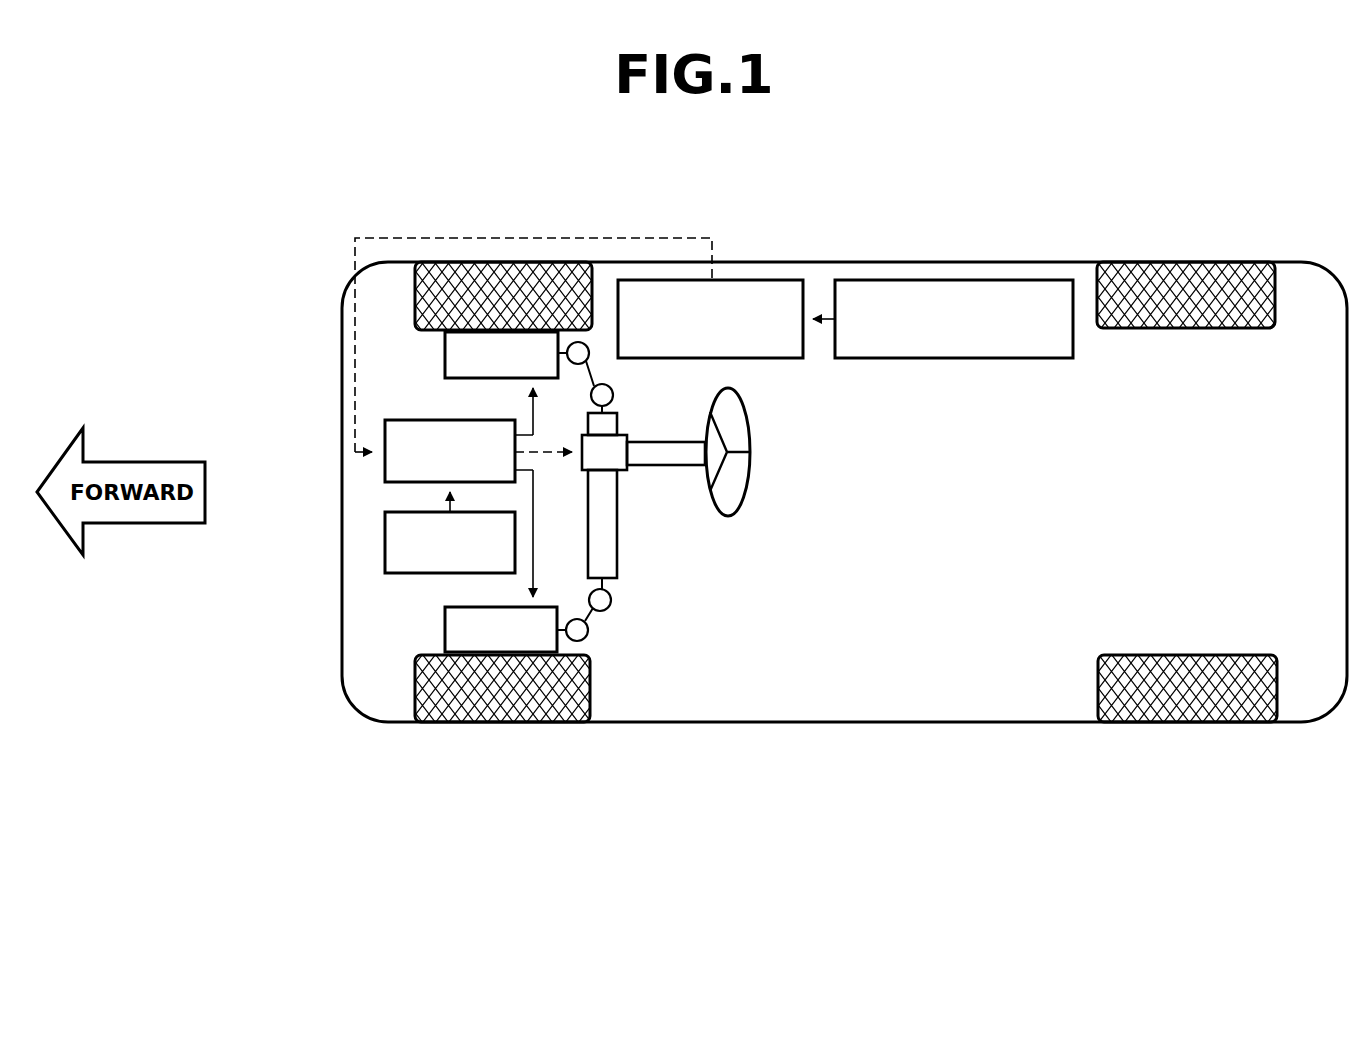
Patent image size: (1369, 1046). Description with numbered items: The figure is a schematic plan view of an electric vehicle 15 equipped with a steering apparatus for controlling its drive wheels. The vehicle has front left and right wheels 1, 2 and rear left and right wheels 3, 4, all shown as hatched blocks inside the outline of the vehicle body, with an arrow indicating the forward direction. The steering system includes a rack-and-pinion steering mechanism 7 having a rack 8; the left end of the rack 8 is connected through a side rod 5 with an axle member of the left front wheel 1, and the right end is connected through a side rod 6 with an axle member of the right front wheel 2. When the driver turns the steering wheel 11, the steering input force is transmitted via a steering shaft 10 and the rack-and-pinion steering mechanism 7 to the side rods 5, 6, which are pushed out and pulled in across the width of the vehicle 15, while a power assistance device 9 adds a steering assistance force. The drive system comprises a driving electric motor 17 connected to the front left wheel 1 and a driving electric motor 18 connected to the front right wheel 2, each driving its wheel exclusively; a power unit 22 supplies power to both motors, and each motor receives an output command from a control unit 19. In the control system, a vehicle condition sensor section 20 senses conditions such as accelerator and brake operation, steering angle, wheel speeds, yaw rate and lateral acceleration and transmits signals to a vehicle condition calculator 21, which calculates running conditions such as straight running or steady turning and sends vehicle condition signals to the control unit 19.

The front left wheel 1 is at (445, 712).
The front right wheel 2 is at (498, 272).
The rear left wheel 3 is at (1148, 713).
The rear right wheel 4 is at (1163, 264).
The side rod 5 is at (604, 612).
The side rod 6 is at (602, 383).
The rack-and-pinion steering mechanism 7 is at (690, 466).
The rack 8 is at (610, 553).
The power assistance device 9 is at (668, 476).
The steering shaft 10 is at (745, 490).
The steering wheel 11 is at (737, 427).
The electric vehicle 15 is at (356, 714).
The driving electric motor 17 is at (445, 632).
The driving electric motor 18 is at (445, 353).
The control unit 19 is at (385, 465).
The vehicle condition sensor section 20 is at (1000, 278).
The vehicle condition calculator 21 is at (743, 278).
The power unit 22 is at (385, 540).